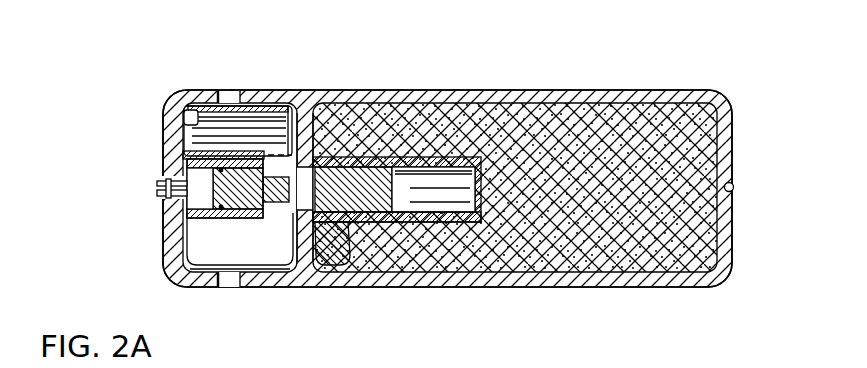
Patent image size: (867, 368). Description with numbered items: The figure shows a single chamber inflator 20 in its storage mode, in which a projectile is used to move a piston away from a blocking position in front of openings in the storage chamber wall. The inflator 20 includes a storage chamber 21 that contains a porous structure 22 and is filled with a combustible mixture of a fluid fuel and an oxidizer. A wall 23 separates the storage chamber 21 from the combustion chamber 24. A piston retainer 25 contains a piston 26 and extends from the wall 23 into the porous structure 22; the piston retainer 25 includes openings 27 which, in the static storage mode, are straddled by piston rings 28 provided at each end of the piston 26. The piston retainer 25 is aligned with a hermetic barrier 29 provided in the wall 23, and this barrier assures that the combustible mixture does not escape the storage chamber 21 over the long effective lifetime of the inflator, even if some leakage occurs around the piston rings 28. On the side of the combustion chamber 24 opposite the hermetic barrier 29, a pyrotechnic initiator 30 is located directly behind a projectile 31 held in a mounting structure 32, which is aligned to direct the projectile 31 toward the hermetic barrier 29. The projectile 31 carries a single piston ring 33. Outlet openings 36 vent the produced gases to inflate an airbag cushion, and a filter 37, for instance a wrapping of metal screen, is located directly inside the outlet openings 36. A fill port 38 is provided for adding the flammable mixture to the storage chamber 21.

The inflator 20 is at (481, 77).
The storage chamber 21 is at (613, 100).
The porous structure 22 is at (703, 108).
The wall 23 is at (322, 103).
The combustion chamber 24 is at (186, 116).
The piston retainer 25 is at (472, 158).
The piston 26 is at (371, 157).
The openings 27 is at (343, 222).
The piston rings 28 is at (385, 218).
The hermetic barrier 29 is at (308, 205).
The pyrotechnic initiator 30 is at (196, 178).
The projectile 31 is at (213, 192).
The mounting structure 32 is at (227, 214).
The piston ring 33 is at (184, 156).
The outlet openings 36 is at (228, 93).
The filter 37 is at (263, 98).
The fill port 38 is at (731, 178).